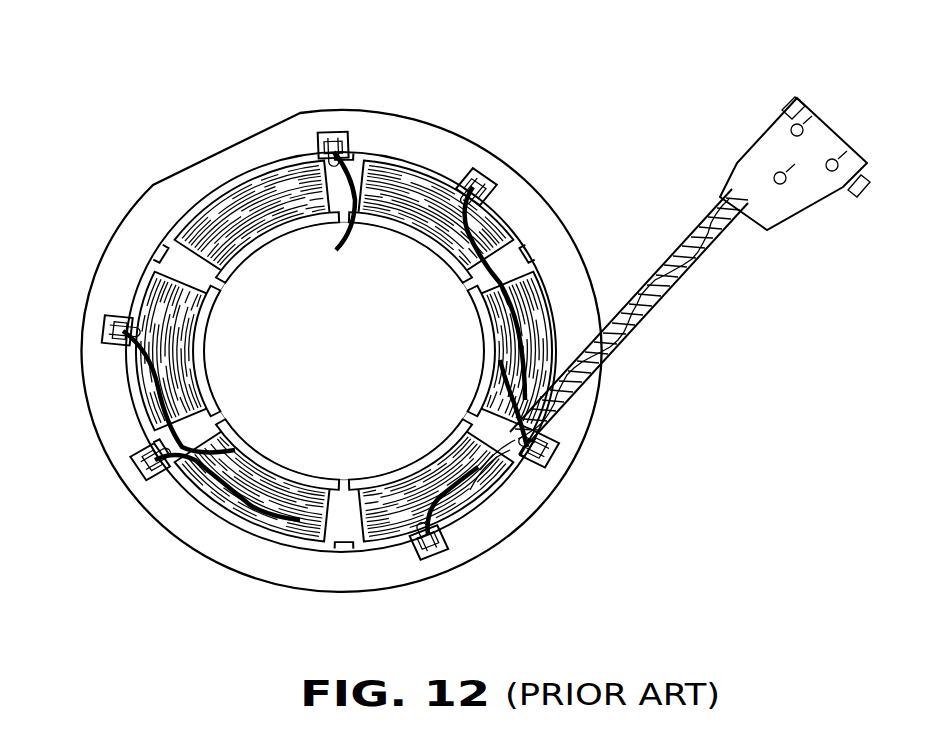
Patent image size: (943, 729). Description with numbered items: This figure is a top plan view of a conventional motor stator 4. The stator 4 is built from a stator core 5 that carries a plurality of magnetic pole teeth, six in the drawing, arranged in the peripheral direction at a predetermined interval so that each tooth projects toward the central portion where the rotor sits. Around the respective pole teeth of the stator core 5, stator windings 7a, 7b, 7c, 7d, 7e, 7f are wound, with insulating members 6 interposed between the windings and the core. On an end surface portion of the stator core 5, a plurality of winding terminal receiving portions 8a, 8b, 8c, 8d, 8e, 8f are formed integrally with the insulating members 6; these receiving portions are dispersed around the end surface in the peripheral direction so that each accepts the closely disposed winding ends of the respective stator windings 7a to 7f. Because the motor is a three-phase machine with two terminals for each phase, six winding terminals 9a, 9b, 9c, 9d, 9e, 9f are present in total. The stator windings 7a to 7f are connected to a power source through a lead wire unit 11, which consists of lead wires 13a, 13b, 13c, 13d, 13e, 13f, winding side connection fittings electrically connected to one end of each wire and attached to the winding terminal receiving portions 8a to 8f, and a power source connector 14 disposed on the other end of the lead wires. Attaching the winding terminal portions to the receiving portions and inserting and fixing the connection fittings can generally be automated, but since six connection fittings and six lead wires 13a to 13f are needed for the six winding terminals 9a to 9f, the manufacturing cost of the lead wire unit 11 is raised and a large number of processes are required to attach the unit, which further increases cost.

The stator 4 is at (132, 203).
The stator core 5 is at (283, 570).
The insulating members 6 is at (490, 380).
The stator winding 7a is at (143, 280).
The stator winding 7b is at (247, 193).
The stator winding 7c is at (413, 163).
The stator winding 7d is at (537, 303).
The stator winding 7e is at (507, 503).
The stator winding 7f is at (232, 500).
The winding terminal receiving portion 8a is at (98, 338).
The winding terminal receiving portion 8b is at (322, 128).
The winding terminal receiving portion 8c is at (480, 190).
The winding terminal receiving portion 8d is at (557, 437).
The winding terminal receiving portion 8e is at (418, 557).
The winding terminal receiving portion 8f is at (137, 453).
The winding terminal 9a is at (98, 323).
The winding terminal 9b is at (348, 128).
The winding terminal 9c is at (473, 190).
The winding terminal 9d is at (557, 443).
The winding terminal 9e is at (430, 547).
The winding terminal 9f is at (137, 467).
The lead wire unit 11 is at (683, 283).
The lead wire 13a is at (203, 420).
The lead wire 13b is at (338, 246).
The lead wire 13c is at (470, 230).
The lead wire 13d is at (550, 477).
The lead wire 13e is at (445, 455).
The lead wire 13f is at (163, 487).
The power source connector 14 is at (793, 207).